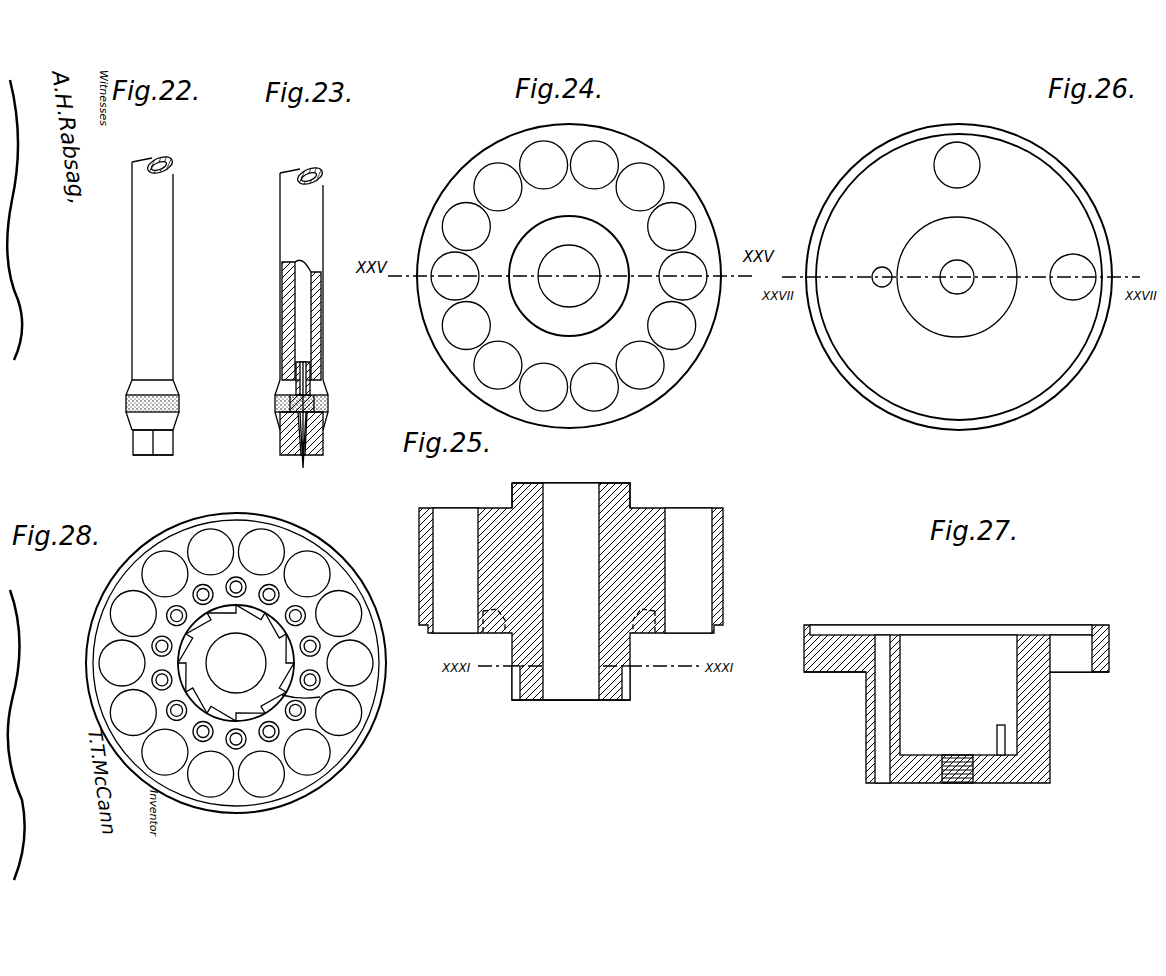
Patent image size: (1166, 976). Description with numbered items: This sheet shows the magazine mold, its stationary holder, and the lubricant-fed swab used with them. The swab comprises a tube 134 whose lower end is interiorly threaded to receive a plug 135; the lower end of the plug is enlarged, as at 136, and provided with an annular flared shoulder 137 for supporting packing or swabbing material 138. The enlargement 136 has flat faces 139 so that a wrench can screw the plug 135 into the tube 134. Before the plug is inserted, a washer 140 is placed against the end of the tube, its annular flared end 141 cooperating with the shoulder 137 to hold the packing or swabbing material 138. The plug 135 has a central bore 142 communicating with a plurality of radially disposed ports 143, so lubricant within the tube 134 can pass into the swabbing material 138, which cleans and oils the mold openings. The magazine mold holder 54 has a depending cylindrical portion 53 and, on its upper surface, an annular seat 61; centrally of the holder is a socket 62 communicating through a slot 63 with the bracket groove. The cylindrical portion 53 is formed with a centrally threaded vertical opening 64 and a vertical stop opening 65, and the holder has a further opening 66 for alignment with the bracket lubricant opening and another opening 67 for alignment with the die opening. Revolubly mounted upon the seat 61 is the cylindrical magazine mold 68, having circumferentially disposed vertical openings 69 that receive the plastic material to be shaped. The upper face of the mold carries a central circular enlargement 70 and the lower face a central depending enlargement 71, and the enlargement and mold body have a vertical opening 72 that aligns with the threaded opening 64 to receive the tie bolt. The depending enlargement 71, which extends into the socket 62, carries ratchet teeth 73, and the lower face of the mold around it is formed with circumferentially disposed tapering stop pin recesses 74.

In FIG. 22, the tube 134 is at (163, 253).
In FIG. 23, the tube 134 is at (302, 272).
In FIG. 23, the plug 135 is at (314, 352).
In FIG. 22, the enlargement 136 is at (153, 456).
In FIG. 23, the enlargement 136 is at (325, 440).
In FIG. 22, the annular flared shoulder 137 is at (180, 418).
In FIG. 23, the annular flared shoulder 137 is at (330, 417).
In FIG. 22, the packing or swabbing material 138 is at (180, 401).
In FIG. 23, the packing or swabbing material 138 is at (330, 402).
In FIG. 22, the flat faces 139 is at (168, 443).
In FIG. 22, the washer 140 is at (174, 380).
In FIG. 23, the washer 140 is at (283, 384).
In FIG. 23, the annular flared end 141 is at (324, 386).
In FIG. 23, the central bore 142 is at (300, 362).
In FIG. 23, the radially disposed ports 143 is at (306, 426).
In FIG. 27, the depending cylindrical portion 53 is at (1003, 775).
In FIG. 26, the magazine mold holder 54 is at (959, 277).
In FIG. 27, the magazine mold holder 54 is at (858, 636).
In FIG. 27, the annular seat 61 is at (844, 632).
In FIG. 26, the socket 62 is at (957, 277).
In FIG. 27, the socket 62 is at (958, 646).
In FIG. 27, the slot 63 is at (991, 739).
In FIG. 26, the threaded vertical opening 64 is at (957, 268).
In FIG. 27, the threaded vertical opening 64 is at (958, 783).
In FIG. 26, the vertical stop opening 65 is at (882, 268).
In FIG. 27, the vertical stop opening 65 is at (871, 748).
In FIG. 26, the opening 66 is at (1073, 277).
In FIG. 27, the opening 66 is at (1078, 646).
In FIG. 26, the opening 67 is at (957, 165).
In FIG. 24, the magazine mold 68 is at (569, 276).
In FIG. 25, the magazine mold 68 is at (640, 522).
In FIG. 28, the magazine mold 68 is at (337, 583).
In FIG. 24, the vertical openings 69 is at (678, 222).
In FIG. 25, the vertical openings 69 is at (572, 570).
In FIG. 28, the vertical openings 69 is at (236, 663).
In FIG. 24, the central circular enlargement 70 is at (569, 276).
In FIG. 25, the central circular enlargement 70 is at (615, 478).
In FIG. 25, the central depending enlargement 71 is at (610, 700).
In FIG. 28, the central depending enlargement 71 is at (236, 663).
In FIG. 24, the vertical opening 72 is at (569, 276).
In FIG. 25, the vertical opening 72 is at (566, 630).
In FIG. 28, the vertical opening 72 is at (236, 663).
In FIG. 25, the ratchet teeth 73 is at (514, 685).
In FIG. 28, the ratchet teeth 73 is at (320, 697).
In FIG. 28, the tapering stop pin recesses 74 is at (272, 735).